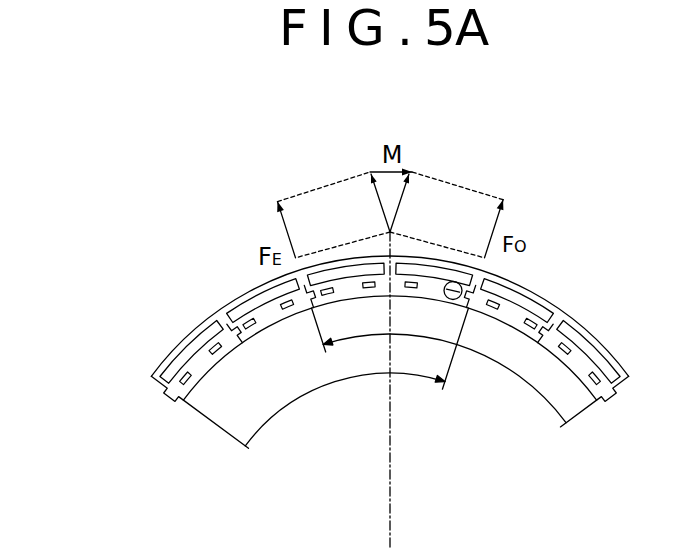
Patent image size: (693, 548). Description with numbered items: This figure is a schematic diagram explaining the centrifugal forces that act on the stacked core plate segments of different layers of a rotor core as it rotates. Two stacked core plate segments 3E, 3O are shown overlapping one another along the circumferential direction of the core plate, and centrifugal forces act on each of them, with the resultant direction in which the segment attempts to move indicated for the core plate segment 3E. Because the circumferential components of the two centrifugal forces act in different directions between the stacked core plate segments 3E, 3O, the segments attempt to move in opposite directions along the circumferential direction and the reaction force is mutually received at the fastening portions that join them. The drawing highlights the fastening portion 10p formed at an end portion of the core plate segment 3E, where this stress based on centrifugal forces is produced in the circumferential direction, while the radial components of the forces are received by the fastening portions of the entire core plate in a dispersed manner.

The fastening portion 10p is at (455, 300).
The core plate segment 3E is at (356, 377).
The core plate segment 3O is at (444, 378).